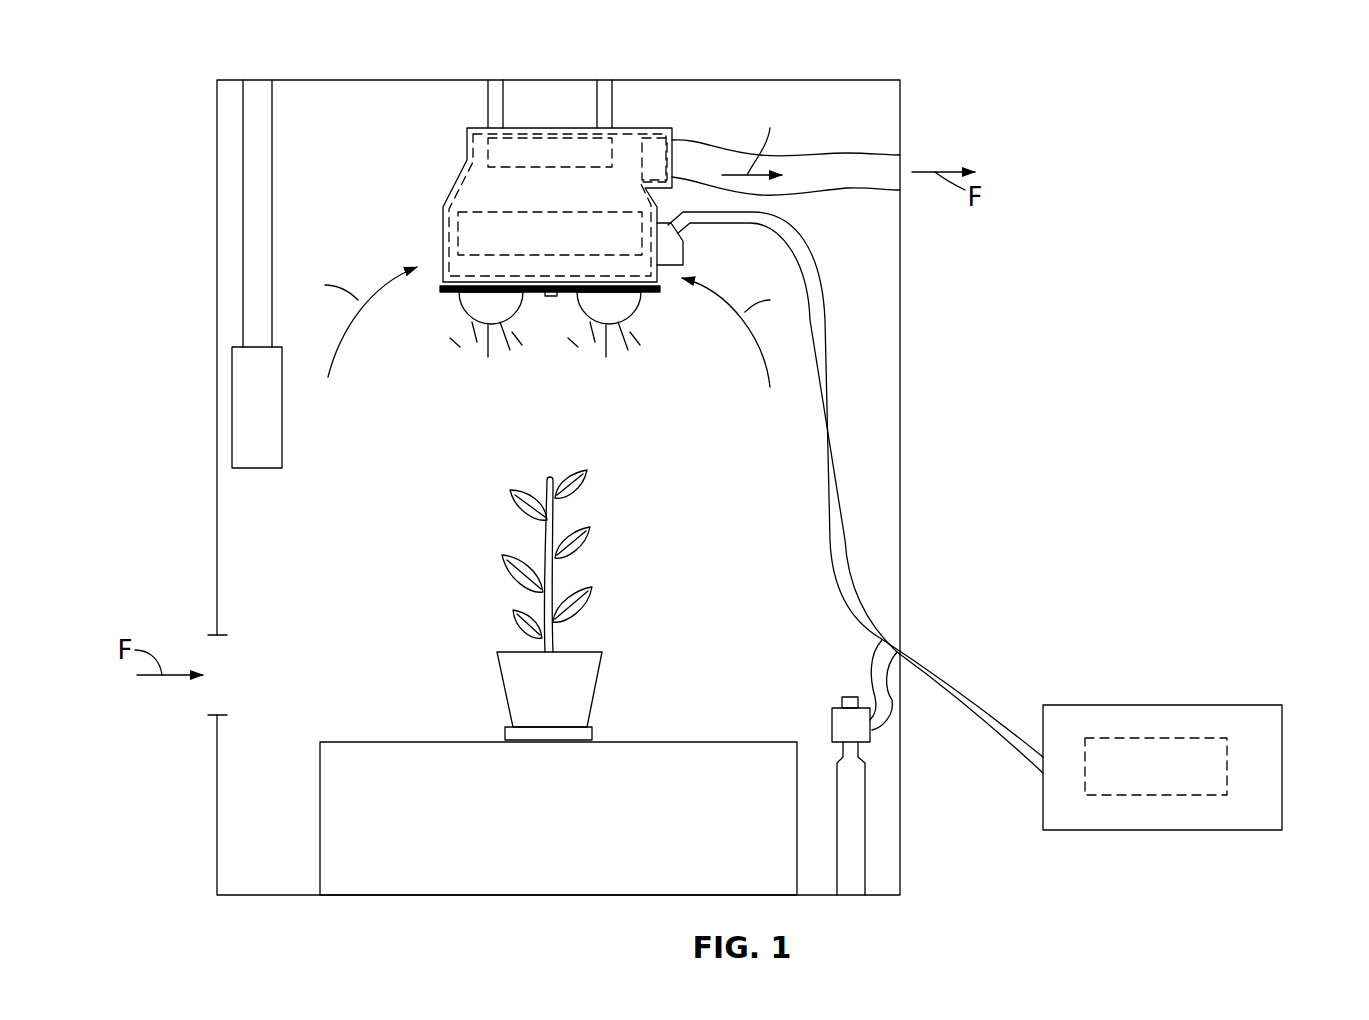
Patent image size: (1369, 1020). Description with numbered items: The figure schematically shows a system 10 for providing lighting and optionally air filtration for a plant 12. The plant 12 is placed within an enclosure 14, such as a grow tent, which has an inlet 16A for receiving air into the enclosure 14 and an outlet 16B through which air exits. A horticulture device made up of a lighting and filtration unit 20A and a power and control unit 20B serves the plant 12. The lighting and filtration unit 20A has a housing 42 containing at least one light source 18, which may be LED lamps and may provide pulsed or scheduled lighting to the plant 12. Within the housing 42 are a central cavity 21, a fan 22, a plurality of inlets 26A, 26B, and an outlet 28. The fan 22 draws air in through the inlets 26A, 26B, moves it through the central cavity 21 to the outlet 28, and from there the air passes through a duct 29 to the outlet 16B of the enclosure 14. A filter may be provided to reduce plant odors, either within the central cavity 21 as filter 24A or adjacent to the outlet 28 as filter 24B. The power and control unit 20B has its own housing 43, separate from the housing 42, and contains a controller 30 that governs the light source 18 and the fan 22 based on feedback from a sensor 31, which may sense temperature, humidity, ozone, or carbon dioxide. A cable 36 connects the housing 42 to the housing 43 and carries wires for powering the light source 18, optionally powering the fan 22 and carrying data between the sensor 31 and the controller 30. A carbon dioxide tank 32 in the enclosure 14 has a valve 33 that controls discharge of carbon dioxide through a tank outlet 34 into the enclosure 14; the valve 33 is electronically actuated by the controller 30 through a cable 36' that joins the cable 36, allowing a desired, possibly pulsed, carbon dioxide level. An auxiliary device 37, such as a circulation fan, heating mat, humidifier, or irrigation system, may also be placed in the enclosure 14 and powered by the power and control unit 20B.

The system 10 is at (948, 93).
The plant 12 is at (497, 530).
The enclosure 14 is at (217, 215).
The inlet 16A is at (218, 657).
The outlet 16B is at (900, 163).
The light source 18 is at (463, 308).
The lighting and filtration unit 20A is at (433, 148).
The power and control unit 20B is at (1238, 675).
The central cavity 21 is at (455, 190).
The fan 22 is at (540, 143).
The filter 24A is at (458, 228).
The filter 24B is at (647, 143).
The inlet 26A is at (440, 280).
The inlet 26B is at (658, 277).
The outlet 28 is at (673, 160).
The duct 29 is at (847, 152).
The controller 30 is at (1155, 797).
The sensor 31 is at (549, 296).
The carbon dioxide tank 32 is at (852, 888).
The valve 33 is at (840, 730).
The tank outlet 34 is at (850, 697).
The cable 36 is at (855, 492).
The cable 36' is at (916, 700).
The auxiliary device 37 is at (243, 421).
The housing 42 is at (468, 143).
The housing 43 is at (1282, 767).